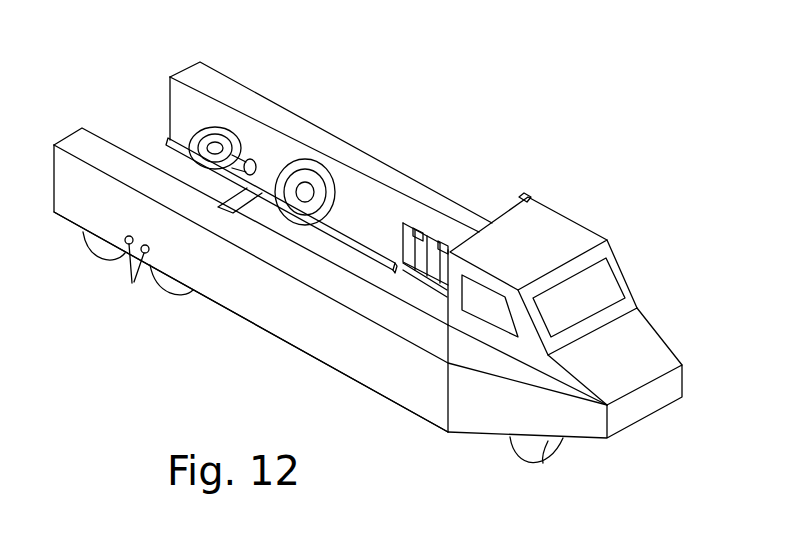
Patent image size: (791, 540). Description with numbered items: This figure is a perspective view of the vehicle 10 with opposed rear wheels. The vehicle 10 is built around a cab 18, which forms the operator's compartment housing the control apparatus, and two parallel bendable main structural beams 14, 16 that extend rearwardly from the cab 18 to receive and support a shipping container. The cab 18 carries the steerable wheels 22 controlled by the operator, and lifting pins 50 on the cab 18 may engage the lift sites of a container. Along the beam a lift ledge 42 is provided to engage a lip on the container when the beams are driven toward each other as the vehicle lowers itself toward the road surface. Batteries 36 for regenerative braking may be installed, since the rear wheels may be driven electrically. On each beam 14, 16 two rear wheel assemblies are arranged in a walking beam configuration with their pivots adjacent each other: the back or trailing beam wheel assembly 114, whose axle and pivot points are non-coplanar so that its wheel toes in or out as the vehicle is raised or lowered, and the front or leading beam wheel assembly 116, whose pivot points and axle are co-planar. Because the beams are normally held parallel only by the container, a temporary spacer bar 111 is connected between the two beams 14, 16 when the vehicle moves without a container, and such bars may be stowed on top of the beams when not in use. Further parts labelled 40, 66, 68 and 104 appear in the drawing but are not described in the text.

The vehicle 10 is at (511, 132).
The bendable beam 14 is at (258, 305).
The bendable beam 16 is at (393, 178).
The cab 18 is at (627, 325).
The steerable wheels 22 is at (543, 460).
The batteries 36 is at (440, 240).
The guide rails 40 is at (385, 220).
The lift ledge 42 is at (333, 203).
The lifting pins 50 is at (524, 194).
The hull side wall 66 is at (358, 367).
The housing 68 is at (170, 85).
The tie-down rings 104 is at (129, 277).
The temporary spacer bars 111 is at (165, 160).
The trailing beam wheel assembly 114 is at (187, 101).
The leading beam wheel assembly 116 is at (296, 178).